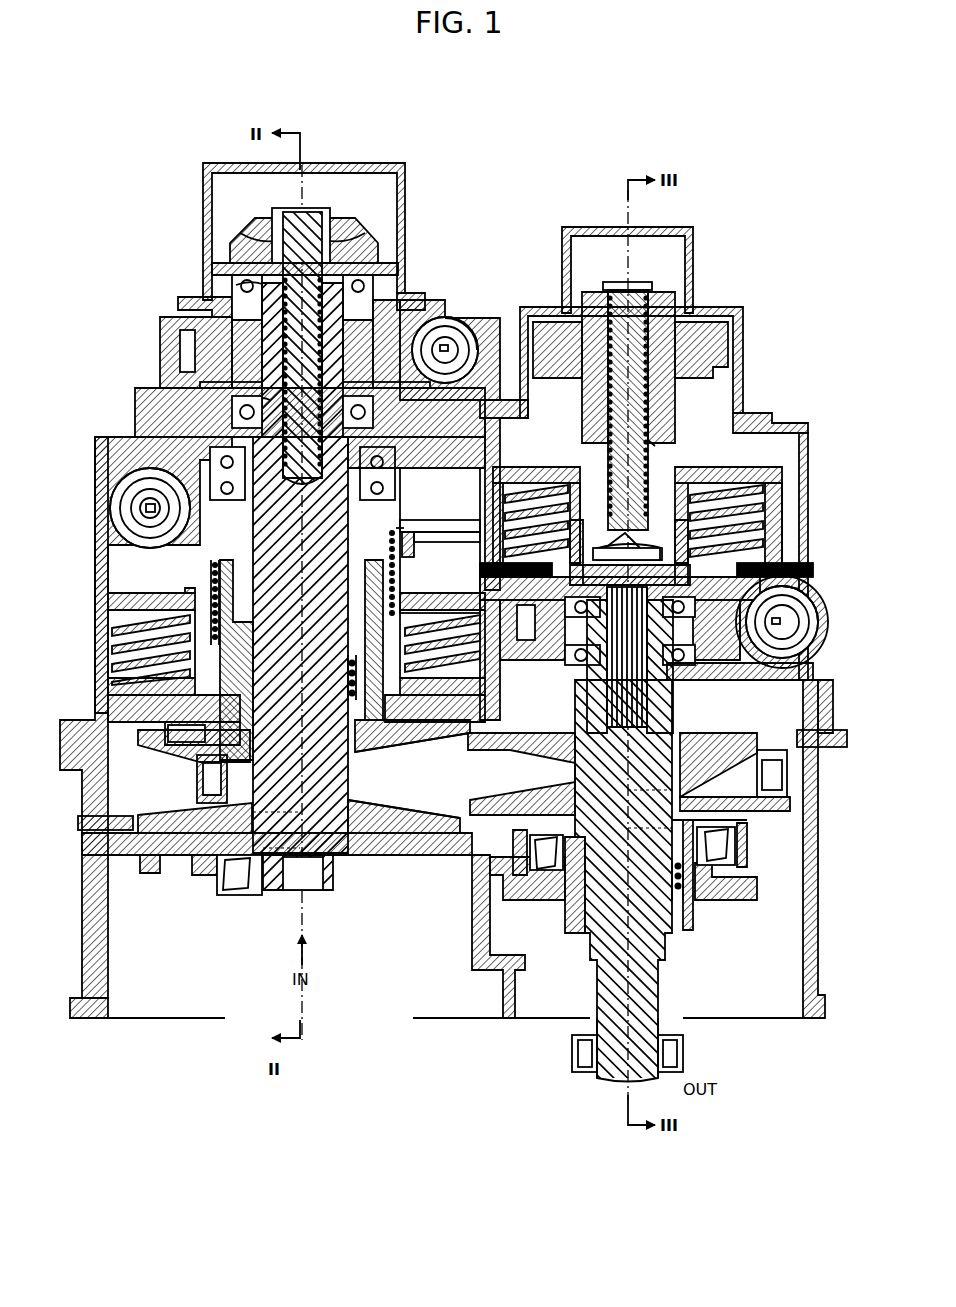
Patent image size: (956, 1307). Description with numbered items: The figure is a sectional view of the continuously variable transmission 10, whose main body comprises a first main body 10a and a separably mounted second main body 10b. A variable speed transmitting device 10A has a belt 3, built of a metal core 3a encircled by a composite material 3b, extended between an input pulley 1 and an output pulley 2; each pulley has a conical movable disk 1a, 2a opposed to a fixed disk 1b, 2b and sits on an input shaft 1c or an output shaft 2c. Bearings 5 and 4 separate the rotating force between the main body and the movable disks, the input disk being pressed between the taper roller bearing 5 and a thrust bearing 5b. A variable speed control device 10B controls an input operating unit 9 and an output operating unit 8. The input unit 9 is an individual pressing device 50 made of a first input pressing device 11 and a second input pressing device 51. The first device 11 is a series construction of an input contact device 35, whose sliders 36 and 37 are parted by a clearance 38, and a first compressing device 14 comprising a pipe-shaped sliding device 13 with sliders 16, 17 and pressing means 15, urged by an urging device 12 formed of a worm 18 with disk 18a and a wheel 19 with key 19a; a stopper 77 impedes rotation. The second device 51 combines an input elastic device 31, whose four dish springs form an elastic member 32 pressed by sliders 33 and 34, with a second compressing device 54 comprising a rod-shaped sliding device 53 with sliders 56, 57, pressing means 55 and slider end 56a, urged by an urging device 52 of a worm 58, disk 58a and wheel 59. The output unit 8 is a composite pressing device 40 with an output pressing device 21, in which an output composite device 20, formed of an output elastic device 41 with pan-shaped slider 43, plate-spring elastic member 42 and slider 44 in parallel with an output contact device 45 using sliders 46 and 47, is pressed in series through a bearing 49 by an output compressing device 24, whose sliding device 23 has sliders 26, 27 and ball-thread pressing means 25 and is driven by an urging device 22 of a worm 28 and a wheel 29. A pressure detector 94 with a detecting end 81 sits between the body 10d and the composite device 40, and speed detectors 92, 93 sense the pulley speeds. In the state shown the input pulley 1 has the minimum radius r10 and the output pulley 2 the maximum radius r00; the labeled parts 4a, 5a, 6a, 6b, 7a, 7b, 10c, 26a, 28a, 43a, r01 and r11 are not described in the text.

The input pulley 1 is at (340, 875).
The movable disk 1a is at (150, 738).
The fixed disk 1b is at (175, 818).
The input shaft 1c is at (350, 765).
The output pulley 2 is at (520, 930).
The movable disk 2a is at (485, 803).
The fixed disk 2b is at (515, 752).
The output shaft 2c is at (658, 968).
The belt 3 is at (415, 800).
The metal core 3a is at (205, 770).
The composite material 3b is at (205, 792).
The bearing 4 is at (745, 845).
The bearing 4a is at (700, 660).
The bearing 5 is at (125, 703).
The plate 5a is at (470, 370).
The thrust bearing 5b is at (262, 455).
The nut 6a is at (675, 1055).
The retaining ring 6b is at (790, 770).
The hub 7a is at (175, 358).
The bearing 7b is at (235, 870).
The output operating unit 8 is at (560, 200).
The input operating unit 9 is at (428, 230).
The continuously variable transmission 10 is at (490, 143).
The variable speed transmitting device 10A is at (475, 880).
The variable speed control device 10B is at (503, 268).
The first main body 10a is at (818, 958).
The second main body 10b is at (500, 408).
The housing partition 10c is at (810, 594).
The body 10d is at (822, 700).
The first input pressing device 11 is at (140, 568).
The urging device 12 is at (140, 408).
The sliding device 13 is at (422, 540).
The first compressing device 14 is at (416, 548).
The pressing means 15 is at (398, 560).
The slider 16 is at (440, 553).
The slider 17 is at (398, 575).
The worm 18 is at (120, 492).
The disk 18a is at (135, 492).
The wheel 19 is at (398, 490).
The key 19a is at (208, 565).
The output composite device 20 is at (790, 418).
The output pressing device 21 is at (770, 275).
The urging device 22 is at (840, 638).
The sliding device 23 is at (605, 283).
The output compressing device 24 is at (742, 385).
The ball-thread pressing means 25 is at (660, 310).
The slider 26 is at (655, 450).
The screw shoulder 26a is at (660, 428).
The slider 27 is at (672, 395).
The worm 28 is at (812, 640).
The bearing inner race 28a is at (800, 622).
The wheel 29 is at (815, 672).
The input elastic device 31 is at (108, 630).
The elastic member 32 is at (120, 658).
The slider 33 is at (455, 596).
The slider 34 is at (115, 680).
The input contact device 35 is at (346, 672).
The slider 36 is at (430, 700).
The slider 37 is at (370, 630).
The clearance 38 is at (240, 652).
The composite pressing device 40 is at (575, 433).
The output elastic device 41 is at (760, 488).
The elastic member 42 is at (770, 515).
The slider 43 is at (535, 478).
The spring seat 43a is at (675, 500).
The slider 44 is at (570, 585).
The output contact device 45 is at (790, 545).
The slider 46 is at (825, 600).
The slider 47 is at (785, 535).
The bearing 49 is at (655, 548).
The individual pressing device 50 is at (100, 297).
The second input pressing device 51 is at (160, 340).
The urging device 52 is at (185, 305).
The sliding device 53 is at (350, 228).
The second compressing device 54 is at (372, 172).
The pressing means 55 is at (240, 228).
The slider 56 is at (240, 285).
The end of slider 56a is at (300, 230).
The slider 57 is at (180, 335).
The worm 58 is at (470, 335).
The disk 58a is at (455, 320).
The wheel 59 is at (398, 305).
The stopper 77 is at (475, 525).
The detecting end 81 is at (710, 335).
The input pulley rotating speed detector 92 is at (82, 820).
The output pulley rotating speed detector 93 is at (840, 738).
The pressure detector 94 is at (815, 570).
The maximum radius r00 is at (650, 824).
The radius r01 is at (650, 786).
The minimum radius r10 is at (276, 802).
The radius r11 is at (278, 838).